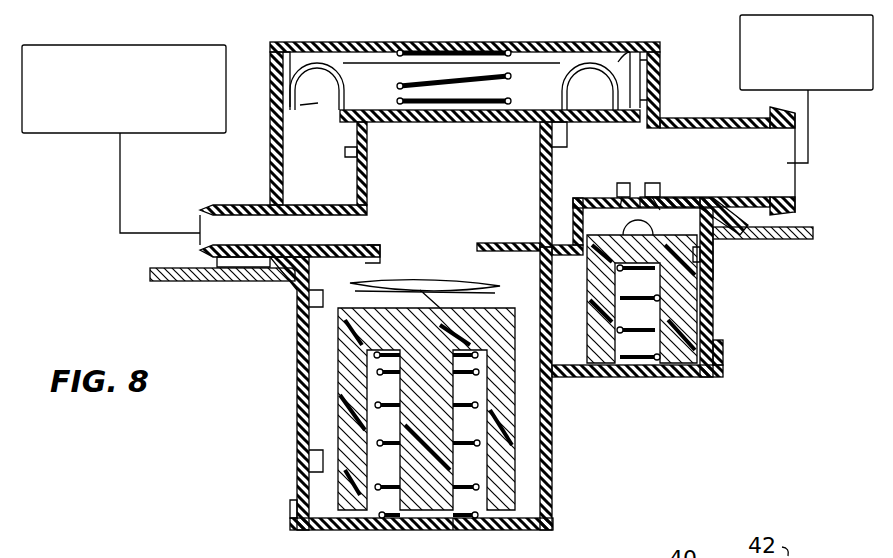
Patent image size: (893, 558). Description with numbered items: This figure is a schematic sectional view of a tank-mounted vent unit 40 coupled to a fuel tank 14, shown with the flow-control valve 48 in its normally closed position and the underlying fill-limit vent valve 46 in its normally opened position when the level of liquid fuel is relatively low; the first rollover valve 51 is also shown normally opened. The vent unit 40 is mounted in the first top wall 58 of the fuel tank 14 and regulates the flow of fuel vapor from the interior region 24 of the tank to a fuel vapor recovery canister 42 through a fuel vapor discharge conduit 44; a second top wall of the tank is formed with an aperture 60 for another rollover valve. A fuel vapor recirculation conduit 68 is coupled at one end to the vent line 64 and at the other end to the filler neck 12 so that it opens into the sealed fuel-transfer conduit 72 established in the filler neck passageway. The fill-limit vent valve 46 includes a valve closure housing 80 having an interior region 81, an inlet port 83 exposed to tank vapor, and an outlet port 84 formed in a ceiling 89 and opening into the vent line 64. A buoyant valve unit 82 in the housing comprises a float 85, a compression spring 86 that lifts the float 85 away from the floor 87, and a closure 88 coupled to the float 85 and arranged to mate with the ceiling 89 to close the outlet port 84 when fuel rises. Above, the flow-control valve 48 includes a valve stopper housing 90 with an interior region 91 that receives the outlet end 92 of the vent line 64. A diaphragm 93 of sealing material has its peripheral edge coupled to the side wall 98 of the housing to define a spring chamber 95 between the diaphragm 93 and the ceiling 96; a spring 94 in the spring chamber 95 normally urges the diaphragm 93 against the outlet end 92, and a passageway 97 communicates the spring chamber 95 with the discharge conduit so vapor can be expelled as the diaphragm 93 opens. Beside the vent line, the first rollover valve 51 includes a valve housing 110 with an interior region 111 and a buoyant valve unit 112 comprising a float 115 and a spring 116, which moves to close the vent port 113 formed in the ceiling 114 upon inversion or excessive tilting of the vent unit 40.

The filler neck 12 is at (177, 140).
The fuel tank 14 is at (806, 240).
The interior region of fuel tank 24 is at (183, 300).
The vent unit 40 is at (670, 52).
The fuel vapor recovery canister 42 is at (845, 97).
The fuel vapor discharge conduit 44 is at (812, 133).
The fill-limit vent valve 46 is at (568, 517).
The flow-control valve 48 is at (542, 74).
The first rollover valve 51 is at (695, 303).
The first top wall 58 is at (207, 281).
The aperture 60 is at (297, 270).
The vent line 64 is at (517, 187).
The fuel vapor recirculation conduit 68 is at (117, 200).
The sealed fuel-transfer conduit 72 is at (90, 137).
The valve closure housing 80 is at (292, 383).
The interior region of valve closure housing 81 is at (552, 420).
The buoyant valve unit 82 is at (498, 277).
The inlet port 83 is at (300, 455).
The outlet port 84 is at (475, 245).
The float 85 is at (552, 470).
The compression spring 86 is at (380, 487).
The floor of valve closure housing 87 is at (452, 530).
The closure 88 is at (460, 290).
The ceiling of valve closure housing 89 is at (370, 260).
The valve stopper housing 90 is at (290, 40).
The interior region of valve stopper housing 91 is at (318, 103).
The outlet end of vent line 92 is at (367, 130).
The diaphragm 93 is at (343, 117).
The spring 94 is at (435, 80).
The spring chamber 95 is at (358, 82).
The ceiling of valve stopper housing 96 is at (618, 47).
The passageway 97 is at (647, 98).
The side wall of valve stopper housing 98 is at (270, 97).
The valve housing 110 is at (720, 333).
The interior region of valve housing 111 is at (695, 278).
The buoyant valve unit 112 is at (677, 226).
The vent port 113 is at (668, 202).
The ceiling of valve housing 114 is at (592, 200).
The float 115 is at (673, 350).
The spring 116 is at (640, 333).